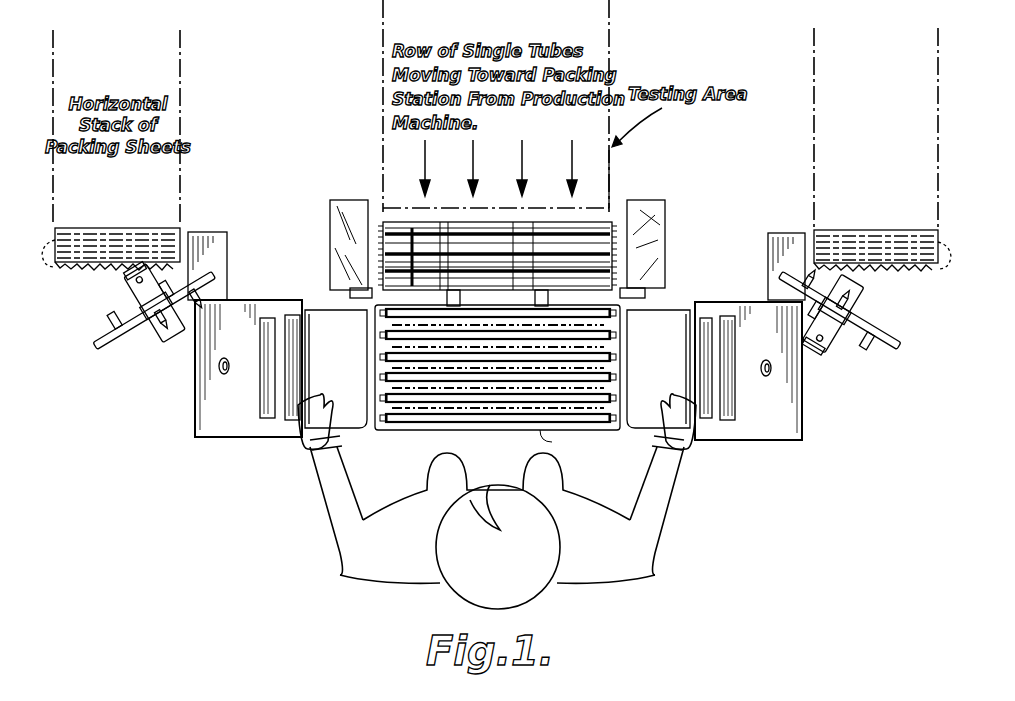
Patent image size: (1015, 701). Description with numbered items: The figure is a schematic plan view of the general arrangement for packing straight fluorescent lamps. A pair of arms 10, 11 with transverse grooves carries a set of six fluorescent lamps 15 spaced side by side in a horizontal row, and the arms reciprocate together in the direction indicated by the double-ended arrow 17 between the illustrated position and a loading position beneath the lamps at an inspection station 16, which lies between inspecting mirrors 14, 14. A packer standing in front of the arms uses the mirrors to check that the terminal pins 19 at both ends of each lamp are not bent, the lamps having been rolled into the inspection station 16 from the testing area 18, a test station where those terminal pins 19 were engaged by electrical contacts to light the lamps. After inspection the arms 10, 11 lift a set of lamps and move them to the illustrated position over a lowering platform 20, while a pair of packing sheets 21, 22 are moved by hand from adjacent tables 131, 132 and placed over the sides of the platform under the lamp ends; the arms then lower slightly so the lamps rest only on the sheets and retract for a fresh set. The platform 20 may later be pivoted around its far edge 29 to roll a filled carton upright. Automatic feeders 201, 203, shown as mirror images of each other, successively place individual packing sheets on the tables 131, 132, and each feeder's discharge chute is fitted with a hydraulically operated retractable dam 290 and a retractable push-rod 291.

The arm 10 is at (448, 430).
The arm 11 is at (544, 430).
The inspecting mirror 14 is at (340, 245).
The fluorescent lamp 15 is at (552, 316).
The inspection station 16 is at (622, 255).
The double-ended arrow 17 is at (396, 237).
The testing area boundary 18 is at (613, 161).
The terminal pin 19 is at (614, 267).
The lowering platform 20 is at (469, 430).
The packing sheet 21 is at (60, 258).
The packing sheet 22 is at (950, 258).
The far edge 29 is at (478, 314).
The table 131 is at (336, 329).
The table 132 is at (662, 320).
The automatic feeder 201 is at (113, 368).
The right stapler 203 is at (843, 380).
The retractable dam 290 is at (272, 318).
The retractable push-rod 291 is at (219, 372).